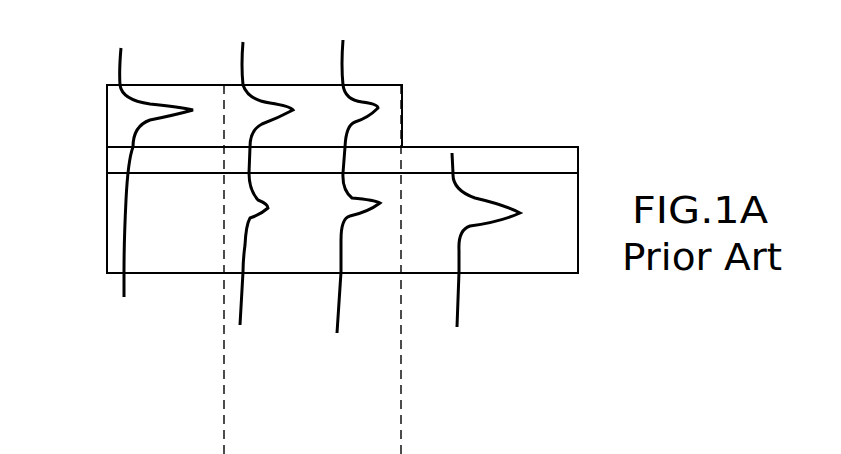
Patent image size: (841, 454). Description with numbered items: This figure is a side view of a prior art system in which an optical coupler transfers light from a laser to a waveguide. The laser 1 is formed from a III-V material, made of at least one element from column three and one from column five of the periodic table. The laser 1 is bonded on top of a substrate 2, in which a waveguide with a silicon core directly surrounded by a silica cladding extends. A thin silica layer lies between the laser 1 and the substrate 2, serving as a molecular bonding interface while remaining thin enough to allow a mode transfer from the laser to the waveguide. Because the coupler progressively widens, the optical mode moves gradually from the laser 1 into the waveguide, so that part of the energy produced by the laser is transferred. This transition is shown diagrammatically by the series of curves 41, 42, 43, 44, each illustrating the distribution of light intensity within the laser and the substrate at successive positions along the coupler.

The laser 1 is at (90, 73).
The substrate 2 is at (86, 218).
The curve 41 is at (118, 283).
The curve 42 is at (242, 303).
The curve 43 is at (340, 318).
The curve 44 is at (458, 303).